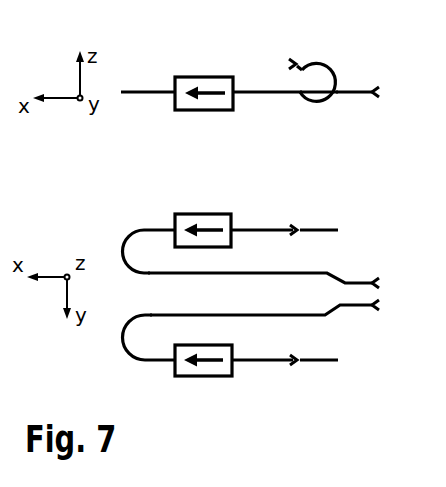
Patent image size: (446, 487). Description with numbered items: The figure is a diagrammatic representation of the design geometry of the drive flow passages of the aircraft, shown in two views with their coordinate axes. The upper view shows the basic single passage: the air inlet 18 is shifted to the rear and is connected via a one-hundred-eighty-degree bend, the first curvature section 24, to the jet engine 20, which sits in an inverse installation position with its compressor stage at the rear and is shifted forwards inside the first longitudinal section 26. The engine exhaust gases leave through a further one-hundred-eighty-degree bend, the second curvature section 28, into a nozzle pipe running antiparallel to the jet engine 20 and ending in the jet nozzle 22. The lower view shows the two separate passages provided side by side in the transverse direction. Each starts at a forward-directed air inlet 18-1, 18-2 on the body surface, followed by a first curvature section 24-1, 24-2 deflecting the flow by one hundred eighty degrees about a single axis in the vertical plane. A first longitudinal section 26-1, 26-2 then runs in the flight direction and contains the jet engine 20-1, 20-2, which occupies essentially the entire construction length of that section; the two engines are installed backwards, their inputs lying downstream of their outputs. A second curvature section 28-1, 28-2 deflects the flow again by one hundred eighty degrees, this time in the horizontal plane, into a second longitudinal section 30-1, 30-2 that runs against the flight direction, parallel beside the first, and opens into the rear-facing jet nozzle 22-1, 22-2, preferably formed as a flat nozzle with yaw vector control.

The air inlet 18 is at (296, 51).
The jet engine 20 is at (204, 83).
The jet nozzle 22 is at (367, 85).
The first curvature section 24 is at (326, 77).
The first longitudinal section 26 is at (267, 105).
The second curvature section 28 is at (148, 84).
The air inlet 18-1 is at (293, 217).
The air inlet 18-2 is at (295, 374).
The jet engine 20-1 is at (203, 220).
The jet engine 20-2 is at (203, 372).
The jet nozzle 22-1 is at (395, 282).
The jet nozzle 22-2 is at (395, 307).
The first curvature section 24-1 is at (326, 218).
The first curvature section 24-2 is at (327, 374).
The first longitudinal section 26-1 is at (262, 242).
The first longitudinal section 26-2 is at (262, 349).
The second curvature section 28-1 is at (132, 247).
The second curvature section 28-2 is at (130, 342).
The second longitudinal section 30-1 is at (260, 285).
The second longitudinal section 30-2 is at (261, 304).